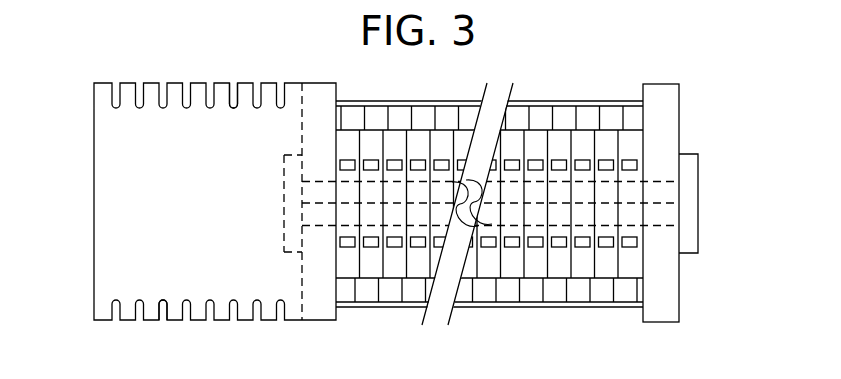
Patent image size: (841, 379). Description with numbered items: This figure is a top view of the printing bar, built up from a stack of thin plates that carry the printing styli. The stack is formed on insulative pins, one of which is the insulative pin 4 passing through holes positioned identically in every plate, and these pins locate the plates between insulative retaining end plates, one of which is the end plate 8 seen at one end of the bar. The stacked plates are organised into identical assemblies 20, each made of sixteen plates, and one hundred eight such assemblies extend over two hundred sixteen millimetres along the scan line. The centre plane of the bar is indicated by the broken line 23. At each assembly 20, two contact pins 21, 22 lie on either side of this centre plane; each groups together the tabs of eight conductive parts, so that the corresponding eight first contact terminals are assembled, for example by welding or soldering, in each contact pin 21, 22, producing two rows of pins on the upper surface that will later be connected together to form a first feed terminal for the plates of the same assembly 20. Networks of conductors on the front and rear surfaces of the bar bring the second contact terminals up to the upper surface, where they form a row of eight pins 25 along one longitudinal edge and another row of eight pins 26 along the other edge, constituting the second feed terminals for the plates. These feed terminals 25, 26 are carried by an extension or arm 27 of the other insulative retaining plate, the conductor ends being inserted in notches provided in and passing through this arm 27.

The insulative pin 4 is at (688, 215).
The insulative retaining end plate 8 is at (663, 315).
The assembly of stacked plates 20 is at (637, 137).
The contact pin 21 is at (633, 242).
The contact pin 22 is at (640, 160).
The centre plane broken line 23 is at (652, 203).
The feed terminal pin 25 is at (163, 307).
The second feed terminal pin 26 is at (234, 88).
The extension arm 27 is at (145, 228).